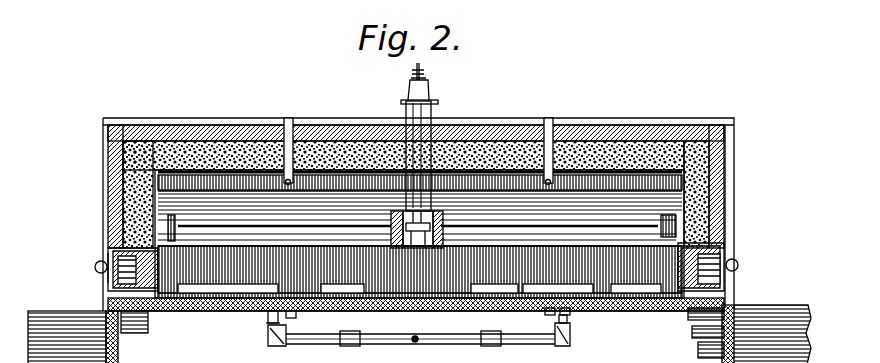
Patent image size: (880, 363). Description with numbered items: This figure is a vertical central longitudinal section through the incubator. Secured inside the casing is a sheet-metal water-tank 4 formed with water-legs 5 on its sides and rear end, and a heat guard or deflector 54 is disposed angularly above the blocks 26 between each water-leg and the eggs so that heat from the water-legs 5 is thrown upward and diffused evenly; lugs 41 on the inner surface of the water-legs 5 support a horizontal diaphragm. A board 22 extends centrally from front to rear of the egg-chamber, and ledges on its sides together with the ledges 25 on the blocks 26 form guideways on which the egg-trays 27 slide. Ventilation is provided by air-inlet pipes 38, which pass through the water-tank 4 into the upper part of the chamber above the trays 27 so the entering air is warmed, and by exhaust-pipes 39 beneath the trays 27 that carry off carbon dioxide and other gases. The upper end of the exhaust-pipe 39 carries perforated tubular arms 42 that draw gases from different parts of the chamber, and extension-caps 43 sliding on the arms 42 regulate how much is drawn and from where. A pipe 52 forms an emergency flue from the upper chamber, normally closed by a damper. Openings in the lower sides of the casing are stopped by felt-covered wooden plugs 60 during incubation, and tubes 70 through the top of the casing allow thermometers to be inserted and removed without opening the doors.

The water-tank 4 is at (201, 130).
The water-legs 5 is at (112, 216).
The board 22 is at (397, 300).
The ledges 25 is at (696, 231).
The blocks 26 is at (696, 218).
The egg-trays 27 is at (225, 304).
The air-inlet pipes 38 is at (281, 305).
The exhaust-pipes 39 is at (260, 311).
The lugs 41 is at (670, 181).
The perforated tubular arms 42 is at (583, 297).
The extension-caps 43 is at (627, 297).
The pipe 52 is at (424, 103).
The heat guard or deflector 54 is at (153, 193).
The plugs 60 is at (100, 246).
The openings or tubes 70 is at (287, 112).